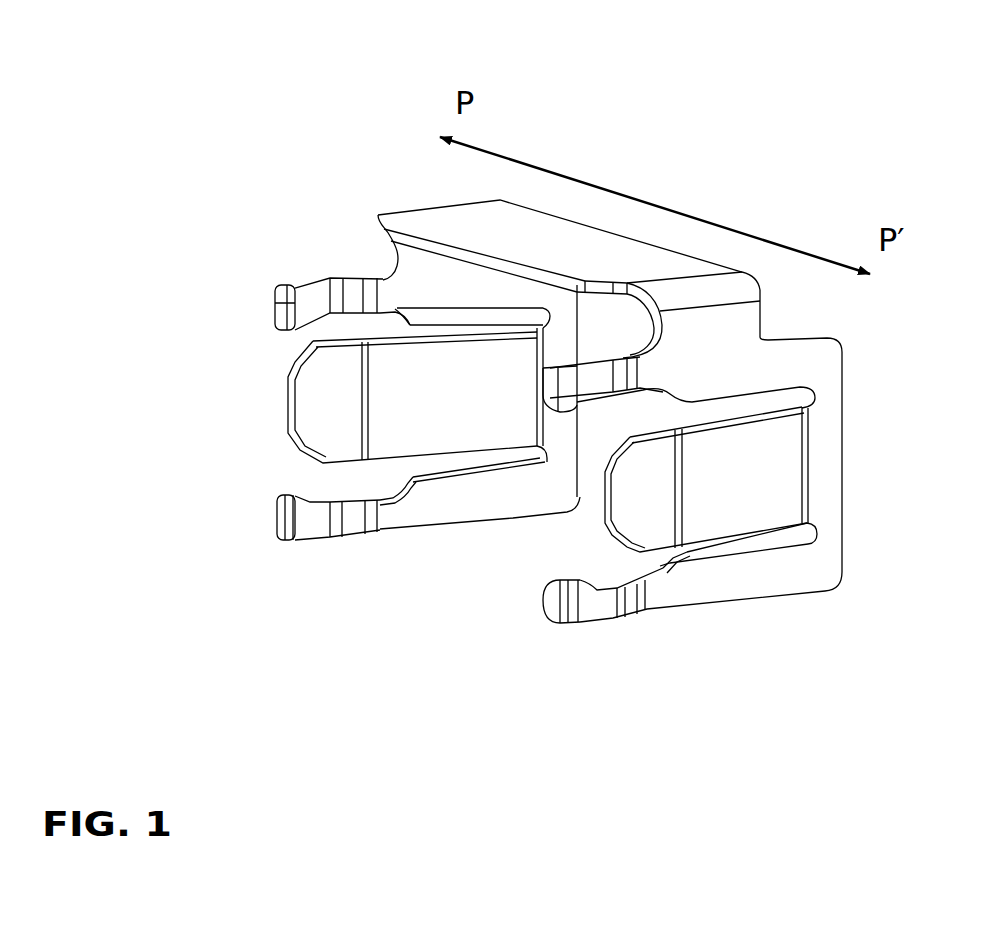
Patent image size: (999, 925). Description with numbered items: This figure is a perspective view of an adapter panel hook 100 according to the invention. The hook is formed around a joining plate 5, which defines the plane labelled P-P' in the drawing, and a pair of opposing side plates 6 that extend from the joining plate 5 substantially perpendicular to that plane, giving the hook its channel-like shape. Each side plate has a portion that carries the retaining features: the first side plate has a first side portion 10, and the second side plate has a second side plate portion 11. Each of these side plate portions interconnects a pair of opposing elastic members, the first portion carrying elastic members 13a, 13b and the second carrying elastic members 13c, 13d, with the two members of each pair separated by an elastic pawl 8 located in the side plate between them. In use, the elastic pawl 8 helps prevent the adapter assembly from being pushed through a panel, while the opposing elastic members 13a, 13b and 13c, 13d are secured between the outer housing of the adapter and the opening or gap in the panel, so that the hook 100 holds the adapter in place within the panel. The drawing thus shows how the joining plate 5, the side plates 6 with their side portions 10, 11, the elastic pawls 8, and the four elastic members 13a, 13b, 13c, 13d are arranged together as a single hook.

The adapter panel hook 100 is at (68, 56).
The joining plate 5 is at (548, 255).
The side plates 6 is at (852, 409).
The elastic pawl 8 is at (736, 504).
The first side portion 10 is at (732, 367).
The second side plate portion 11 is at (447, 305).
The elastic member 13a is at (586, 390).
The elastic member 13b is at (569, 607).
The elastic member 13c is at (323, 298).
The elastic member 13d is at (321, 521).